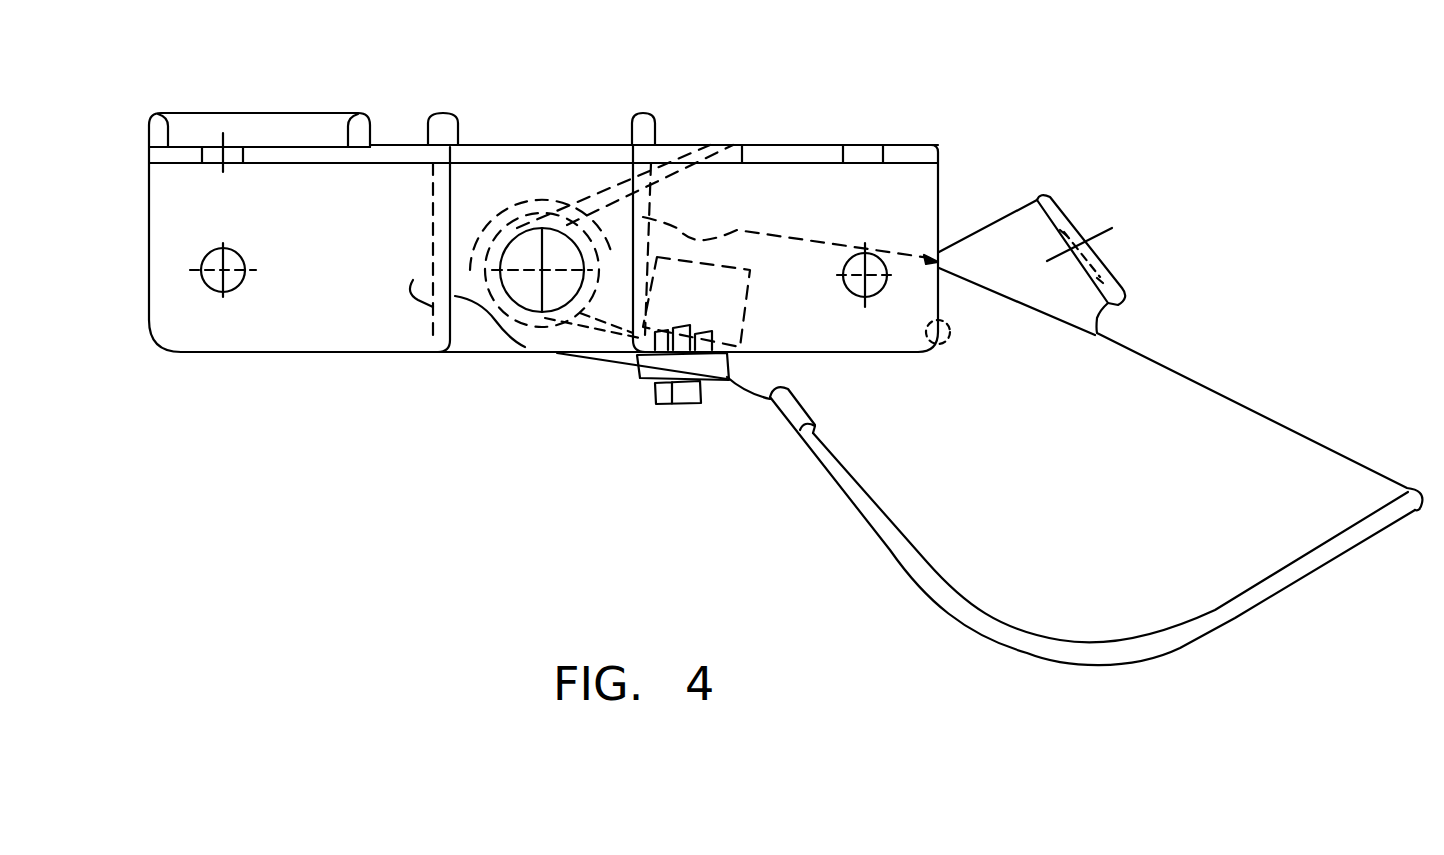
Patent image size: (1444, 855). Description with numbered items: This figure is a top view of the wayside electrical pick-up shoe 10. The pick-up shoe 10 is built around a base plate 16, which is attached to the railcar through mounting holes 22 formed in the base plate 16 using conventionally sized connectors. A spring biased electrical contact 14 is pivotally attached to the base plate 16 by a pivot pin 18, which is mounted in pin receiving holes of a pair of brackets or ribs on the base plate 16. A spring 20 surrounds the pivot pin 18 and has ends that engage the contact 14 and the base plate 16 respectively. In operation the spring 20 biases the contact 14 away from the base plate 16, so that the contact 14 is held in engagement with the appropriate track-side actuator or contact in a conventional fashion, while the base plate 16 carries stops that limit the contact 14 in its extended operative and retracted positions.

The pick-up shoe 10 is at (507, 500).
The electrical contact 14 is at (822, 474).
The base plate 16 is at (246, 352).
The pivot pin 18 is at (518, 293).
The spring 20 is at (598, 193).
The mounting holes 22 is at (231, 148).